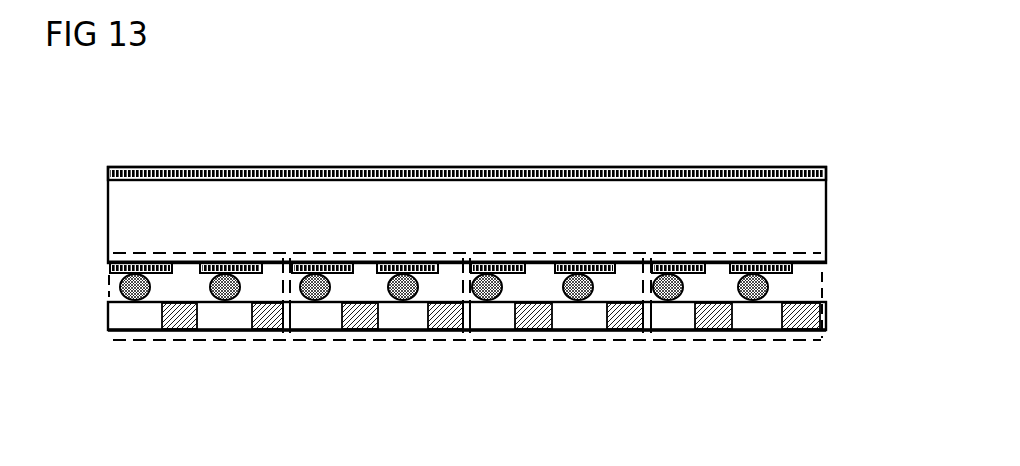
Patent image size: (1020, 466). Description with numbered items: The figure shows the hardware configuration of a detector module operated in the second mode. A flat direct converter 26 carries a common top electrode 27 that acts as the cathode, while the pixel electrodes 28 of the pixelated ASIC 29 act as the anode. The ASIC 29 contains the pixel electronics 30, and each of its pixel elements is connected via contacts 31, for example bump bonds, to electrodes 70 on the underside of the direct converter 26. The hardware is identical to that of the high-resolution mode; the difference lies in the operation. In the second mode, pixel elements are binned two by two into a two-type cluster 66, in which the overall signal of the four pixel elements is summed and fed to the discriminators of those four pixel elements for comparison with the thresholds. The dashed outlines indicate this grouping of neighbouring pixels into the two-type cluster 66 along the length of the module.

The direct converter 26 is at (785, 212).
The common top electrode 27 is at (125, 168).
The electrodes 70 is at (598, 273).
The contacts 31 is at (405, 287).
The pixel electrodes 28 is at (217, 318).
The ASIC 29 is at (826, 308).
The pixel electronics 30 is at (625, 318).
The 2-type cluster 66 is at (137, 343).